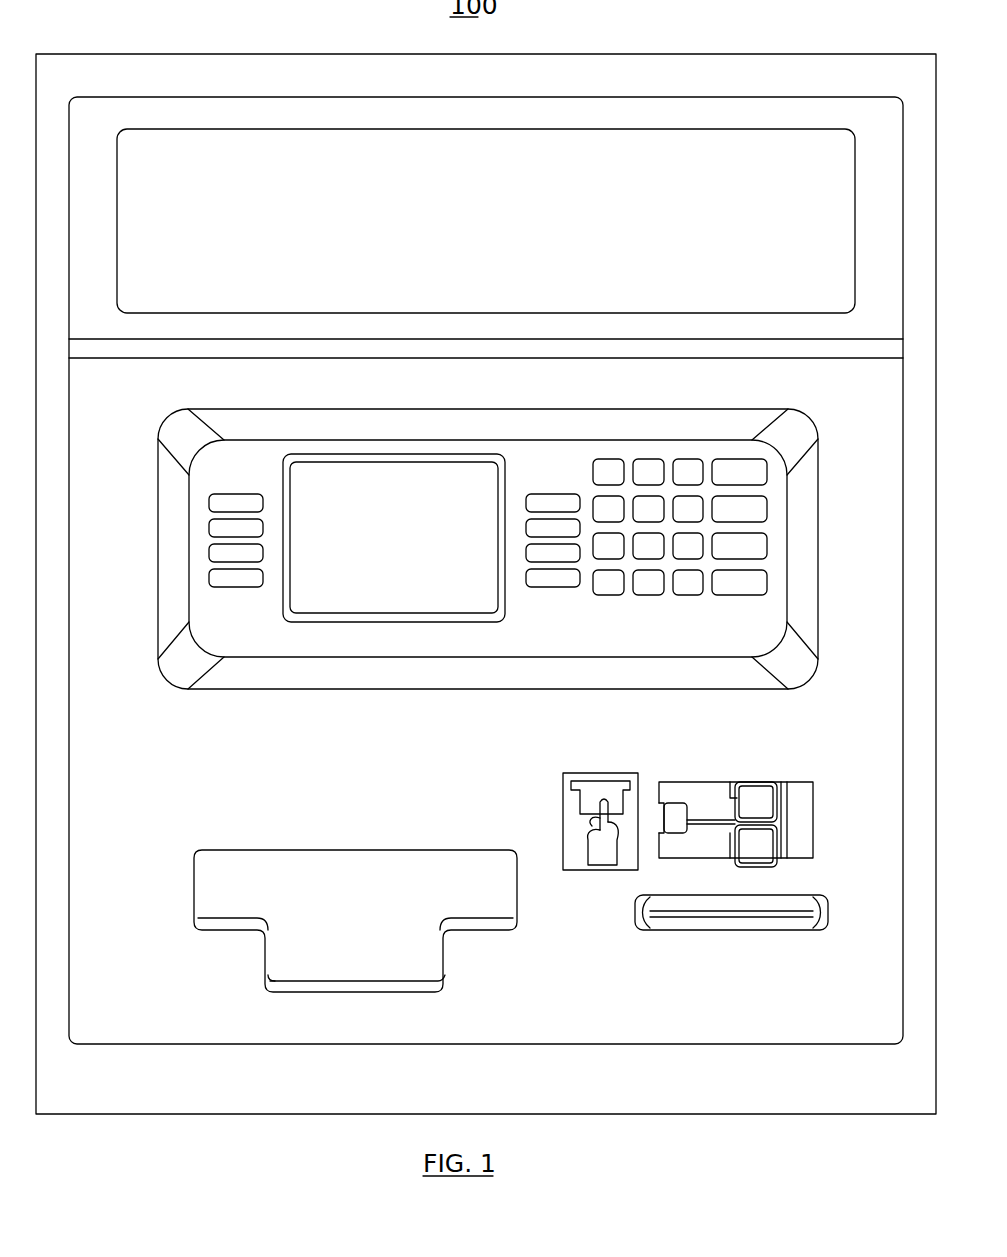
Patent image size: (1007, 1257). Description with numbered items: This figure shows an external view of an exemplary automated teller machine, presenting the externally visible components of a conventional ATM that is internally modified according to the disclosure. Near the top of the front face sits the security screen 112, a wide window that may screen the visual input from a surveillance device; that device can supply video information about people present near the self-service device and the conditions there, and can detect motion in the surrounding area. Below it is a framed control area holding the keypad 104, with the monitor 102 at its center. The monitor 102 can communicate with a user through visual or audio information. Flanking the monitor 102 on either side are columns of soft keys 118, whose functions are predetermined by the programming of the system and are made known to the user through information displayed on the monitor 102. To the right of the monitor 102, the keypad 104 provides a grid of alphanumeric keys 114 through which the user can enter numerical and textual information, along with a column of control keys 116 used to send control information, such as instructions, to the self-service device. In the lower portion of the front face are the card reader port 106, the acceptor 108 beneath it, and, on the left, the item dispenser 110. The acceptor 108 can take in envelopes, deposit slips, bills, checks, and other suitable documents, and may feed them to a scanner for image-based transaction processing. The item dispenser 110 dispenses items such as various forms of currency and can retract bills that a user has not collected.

The monitor 102 is at (427, 458).
The keypad 104 is at (544, 638).
The card reader port 106 is at (812, 781).
The acceptor 108 is at (808, 893).
The item dispenser 110 is at (223, 850).
The security screen 112 is at (758, 128).
The alphanumeric keys 114 is at (605, 595).
The control keys 116 is at (680, 514).
The soft keys 118 is at (240, 480).